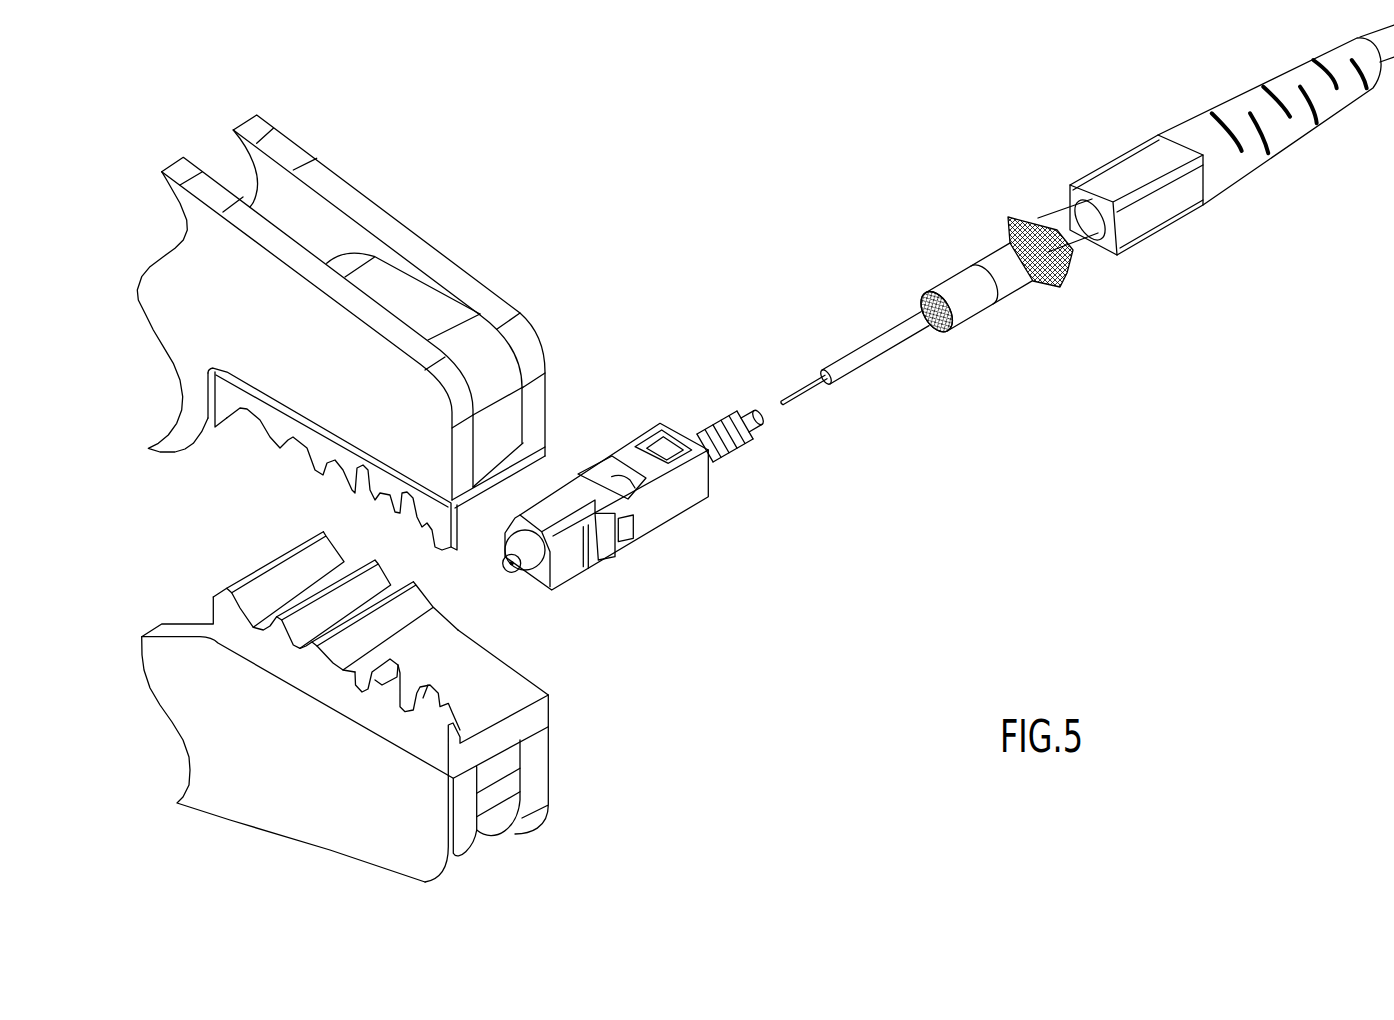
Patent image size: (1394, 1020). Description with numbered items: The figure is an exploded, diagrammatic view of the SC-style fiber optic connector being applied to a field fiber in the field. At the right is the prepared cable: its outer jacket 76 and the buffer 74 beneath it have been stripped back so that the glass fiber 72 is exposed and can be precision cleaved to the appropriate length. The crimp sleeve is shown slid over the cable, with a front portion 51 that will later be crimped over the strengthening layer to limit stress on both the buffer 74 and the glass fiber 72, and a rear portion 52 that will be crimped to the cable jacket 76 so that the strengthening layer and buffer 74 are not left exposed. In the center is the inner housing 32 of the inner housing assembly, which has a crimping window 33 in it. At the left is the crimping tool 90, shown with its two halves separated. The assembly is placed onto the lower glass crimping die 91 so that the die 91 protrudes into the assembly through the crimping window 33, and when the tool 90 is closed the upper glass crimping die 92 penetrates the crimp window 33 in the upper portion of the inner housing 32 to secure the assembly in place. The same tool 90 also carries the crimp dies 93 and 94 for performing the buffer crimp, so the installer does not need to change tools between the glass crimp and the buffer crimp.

The inner housing 32 is at (658, 532).
The crimping window 33 is at (610, 507).
The front portion of the crimp sleeve 51 is at (968, 318).
The rear portion of the crimp sleeve 52 is at (1013, 291).
The glass fiber 72 is at (800, 399).
The buffer 74 is at (868, 358).
The jacket 76 is at (1066, 204).
The crimping tool 90 is at (572, 745).
The lower glass crimping die 91 is at (430, 692).
The upper glass crimping die 92 is at (390, 493).
The crimp die 93 is at (423, 703).
The crimp die 94 is at (426, 535).